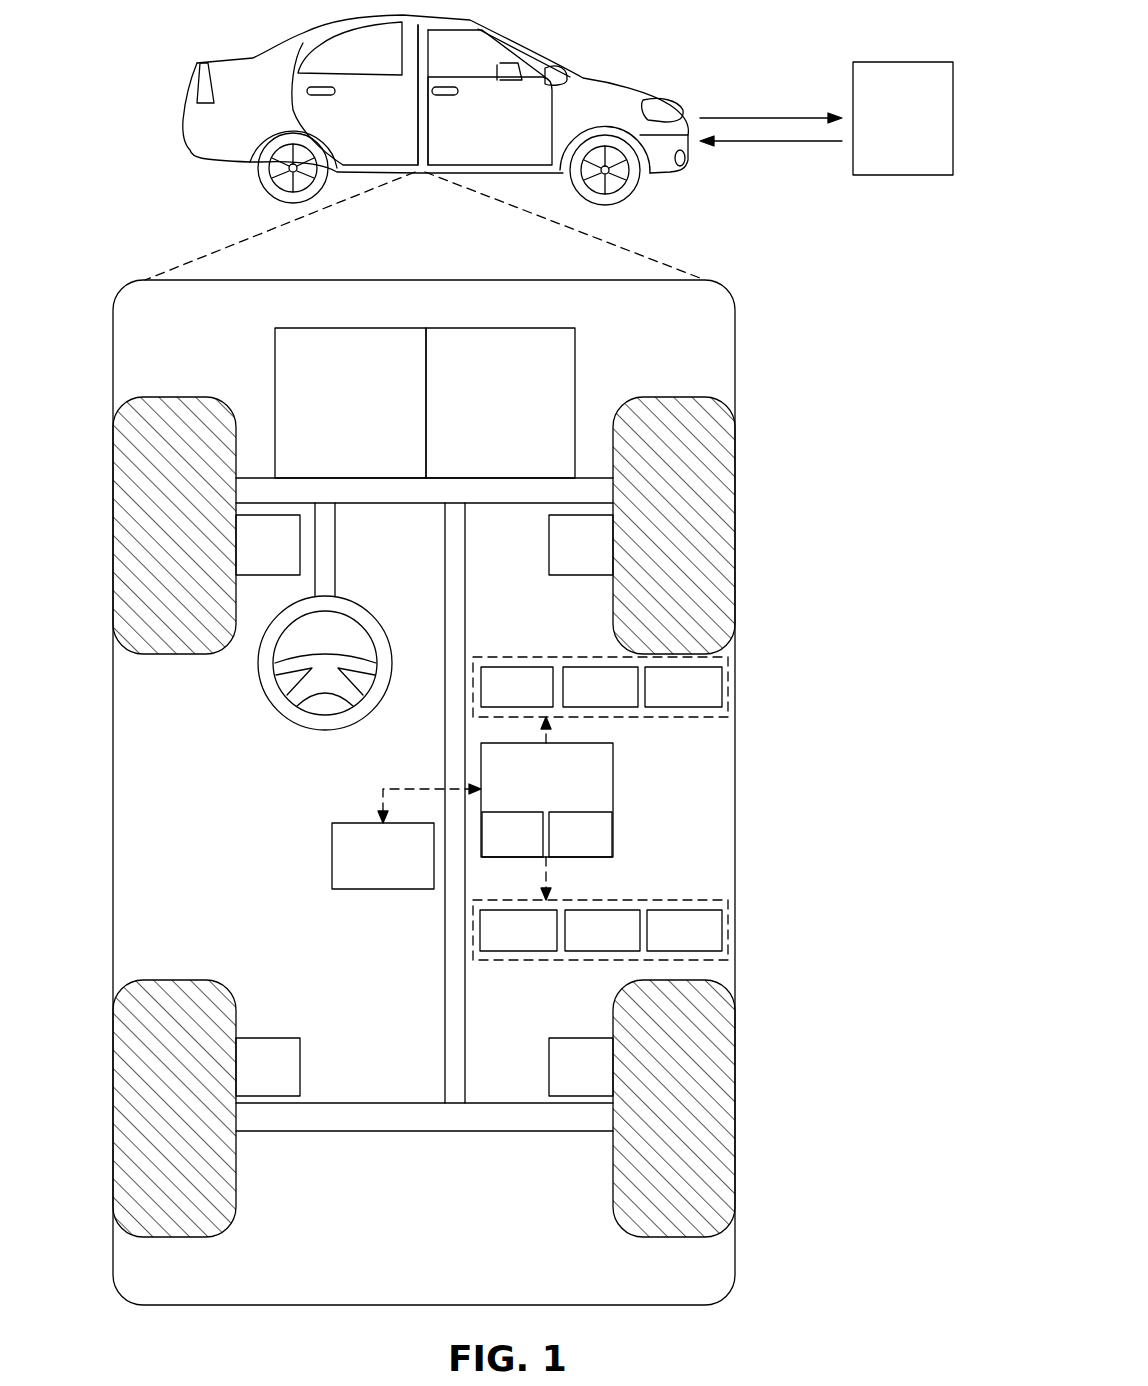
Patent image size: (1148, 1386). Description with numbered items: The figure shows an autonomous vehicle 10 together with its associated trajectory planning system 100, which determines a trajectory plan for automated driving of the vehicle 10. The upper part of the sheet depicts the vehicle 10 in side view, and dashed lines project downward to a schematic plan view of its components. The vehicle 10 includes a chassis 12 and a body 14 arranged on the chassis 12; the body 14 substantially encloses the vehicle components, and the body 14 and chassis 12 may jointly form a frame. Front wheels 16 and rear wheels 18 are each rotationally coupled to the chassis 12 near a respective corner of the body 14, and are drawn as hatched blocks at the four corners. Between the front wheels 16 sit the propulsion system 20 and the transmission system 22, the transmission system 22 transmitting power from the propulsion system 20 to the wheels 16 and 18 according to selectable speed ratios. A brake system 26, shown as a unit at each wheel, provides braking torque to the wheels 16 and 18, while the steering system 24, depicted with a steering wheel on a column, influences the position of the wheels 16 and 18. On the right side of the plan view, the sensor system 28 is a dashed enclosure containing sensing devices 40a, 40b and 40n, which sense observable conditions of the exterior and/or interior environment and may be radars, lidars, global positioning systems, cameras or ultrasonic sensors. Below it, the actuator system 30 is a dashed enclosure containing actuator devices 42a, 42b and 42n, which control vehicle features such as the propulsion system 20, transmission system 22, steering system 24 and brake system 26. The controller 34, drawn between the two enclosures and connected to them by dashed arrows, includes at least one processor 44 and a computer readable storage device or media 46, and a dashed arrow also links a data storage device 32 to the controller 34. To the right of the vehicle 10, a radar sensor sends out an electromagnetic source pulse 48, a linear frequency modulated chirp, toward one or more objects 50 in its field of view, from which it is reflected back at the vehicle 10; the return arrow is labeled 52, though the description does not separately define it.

The vehicle 10 is at (195, 95).
The chassis 12 is at (445, 973).
The body 14 is at (113, 752).
The front wheels 16 is at (172, 397).
The rear wheels 18 is at (176, 1237).
The propulsion system 20 is at (370, 415).
The transmission system 22 is at (520, 415).
The steering system 24 is at (348, 576).
The brake system 26 is at (286, 559).
The sensor system 28 is at (560, 657).
The actuator system 30 is at (564, 960).
The data storage device 32 is at (402, 871).
The controller 34 is at (566, 796).
The sensing device 40a is at (543, 702).
The sensing device 40b is at (626, 702).
The sensing device 40n is at (709, 702).
The actuator device 42a is at (545, 945).
The actuator device 42b is at (628, 945).
The actuator device 42n is at (710, 945).
The processor 44 is at (531, 850).
The computer readable storage device or media 46 is at (599, 850).
The electromagnetic source pulse 48 is at (775, 118).
The object 50 is at (913, 62).
The communication signal from remote system 52 is at (775, 141).
The trajectory planning system 100 is at (436, 774).